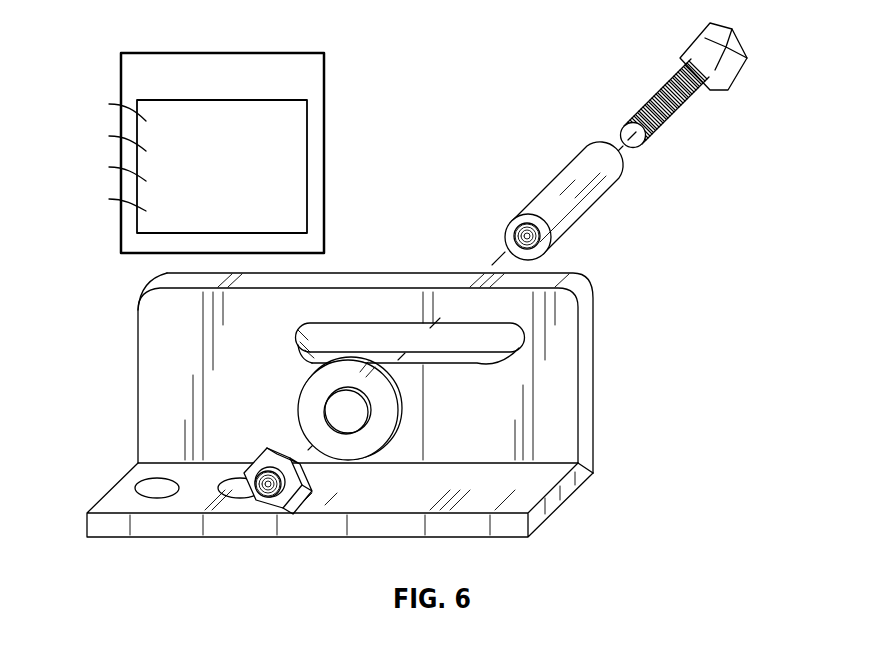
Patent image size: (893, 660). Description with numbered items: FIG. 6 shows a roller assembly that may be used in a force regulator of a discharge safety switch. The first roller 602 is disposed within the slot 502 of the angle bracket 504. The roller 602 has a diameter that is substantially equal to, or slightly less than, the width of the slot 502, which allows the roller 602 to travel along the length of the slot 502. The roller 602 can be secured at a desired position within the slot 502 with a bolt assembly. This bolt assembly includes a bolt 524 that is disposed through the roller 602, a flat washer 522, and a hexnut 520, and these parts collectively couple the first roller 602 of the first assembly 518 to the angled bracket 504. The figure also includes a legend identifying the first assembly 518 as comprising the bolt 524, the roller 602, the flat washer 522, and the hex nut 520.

The first assembly 518 is at (187, 52).
The bolt 524 is at (680, 105).
The first roller 602 is at (545, 190).
The flat washer 522 is at (312, 403).
The hexnut 520 is at (306, 470).
The angle bracket 504 is at (583, 284).
The slot 502 is at (502, 337).